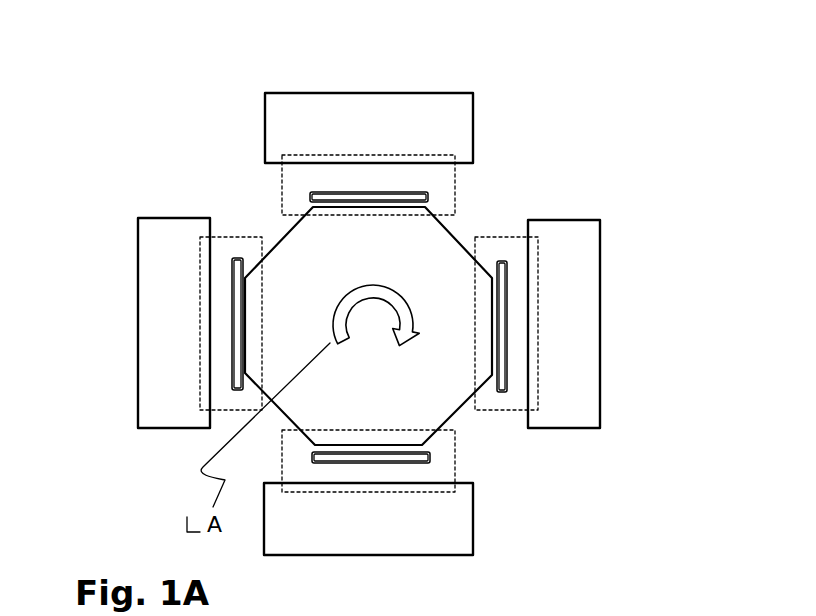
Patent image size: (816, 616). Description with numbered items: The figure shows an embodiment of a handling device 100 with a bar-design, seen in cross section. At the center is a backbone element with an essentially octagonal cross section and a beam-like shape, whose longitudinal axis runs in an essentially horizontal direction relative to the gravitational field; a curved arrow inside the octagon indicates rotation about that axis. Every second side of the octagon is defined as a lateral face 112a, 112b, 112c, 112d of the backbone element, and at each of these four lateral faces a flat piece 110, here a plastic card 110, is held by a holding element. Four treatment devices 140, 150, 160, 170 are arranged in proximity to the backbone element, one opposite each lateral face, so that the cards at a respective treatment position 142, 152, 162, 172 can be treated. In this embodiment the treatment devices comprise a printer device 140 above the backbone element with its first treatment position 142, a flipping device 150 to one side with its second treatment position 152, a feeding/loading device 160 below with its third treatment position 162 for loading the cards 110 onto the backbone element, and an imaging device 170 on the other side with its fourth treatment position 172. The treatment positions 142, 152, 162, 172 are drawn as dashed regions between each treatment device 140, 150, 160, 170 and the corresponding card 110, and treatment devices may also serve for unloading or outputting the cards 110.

The handling device 100 is at (505, 411).
The flat piece 110 is at (390, 266).
The lateral face of backbone element 112a is at (352, 207).
The lateral face of backbone element 112b is at (495, 320).
The lateral face of backbone element 112c is at (352, 447).
The lateral face of backbone element 112d is at (250, 312).
The first treatment device 140 is at (403, 92).
The first treatment position 142 is at (282, 185).
The second treatment device 150 is at (600, 320).
The second treatment position 152 is at (510, 410).
The third treatment device 160 is at (473, 523).
The third treatment position 162 is at (282, 450).
The fourth treatment device 170 is at (138, 290).
The fourth treatment position 172 is at (212, 238).